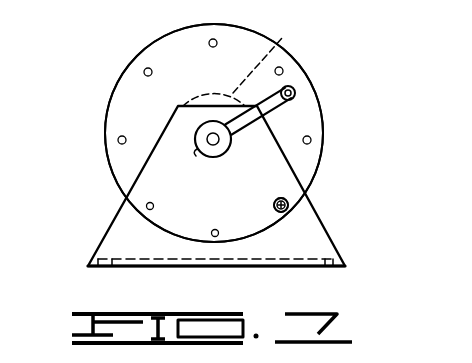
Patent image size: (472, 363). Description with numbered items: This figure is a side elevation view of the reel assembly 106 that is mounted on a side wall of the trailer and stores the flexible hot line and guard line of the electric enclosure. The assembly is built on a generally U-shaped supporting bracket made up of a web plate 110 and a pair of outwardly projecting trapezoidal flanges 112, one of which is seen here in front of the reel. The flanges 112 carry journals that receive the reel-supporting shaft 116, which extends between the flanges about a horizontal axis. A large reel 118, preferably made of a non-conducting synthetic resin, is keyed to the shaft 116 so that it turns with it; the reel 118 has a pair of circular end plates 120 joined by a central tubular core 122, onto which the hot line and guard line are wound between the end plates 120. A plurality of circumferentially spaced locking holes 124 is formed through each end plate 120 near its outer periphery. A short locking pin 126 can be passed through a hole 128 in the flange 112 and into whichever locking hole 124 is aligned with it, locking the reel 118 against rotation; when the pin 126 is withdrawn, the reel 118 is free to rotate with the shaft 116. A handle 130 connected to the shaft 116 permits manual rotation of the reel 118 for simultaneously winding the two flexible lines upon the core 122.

The reel assembly 106 is at (325, 123).
The web plate 110 is at (204, 268).
The trapezoidal flange 112 is at (233, 217).
The reel-supporting shaft 116 is at (212, 141).
The reel 118 is at (137, 103).
The circular end plate 120 is at (211, 72).
The central tubular core 122 is at (270, 47).
The locking hole 124 is at (145, 67).
The locking pin 126 is at (288, 204).
The hole 128 is at (275, 210).
The handle 130 is at (282, 109).